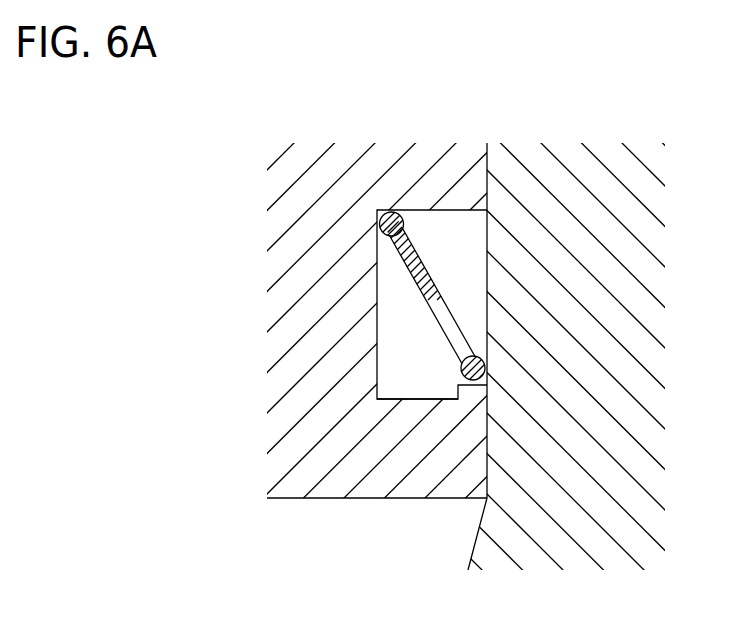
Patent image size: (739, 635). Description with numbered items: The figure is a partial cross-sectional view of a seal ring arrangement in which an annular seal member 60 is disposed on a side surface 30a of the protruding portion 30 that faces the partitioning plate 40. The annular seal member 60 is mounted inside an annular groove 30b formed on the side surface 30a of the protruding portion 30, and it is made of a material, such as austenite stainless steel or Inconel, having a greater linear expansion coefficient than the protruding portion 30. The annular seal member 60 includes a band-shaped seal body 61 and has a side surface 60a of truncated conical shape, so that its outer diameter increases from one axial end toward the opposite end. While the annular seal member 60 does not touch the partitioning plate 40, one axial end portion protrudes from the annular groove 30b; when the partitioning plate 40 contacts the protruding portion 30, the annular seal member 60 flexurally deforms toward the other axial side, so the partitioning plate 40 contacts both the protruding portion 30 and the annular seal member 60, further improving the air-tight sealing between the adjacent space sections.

The protruding portion 30 is at (340, 167).
The side surface of the protruding portion 30a is at (488, 157).
The annular groove 30b is at (428, 398).
The partitioning plate 40 is at (603, 167).
The annular seal member 60 is at (423, 227).
The side surface of the annular seal member 60a is at (428, 302).
The seal body 61 is at (410, 275).